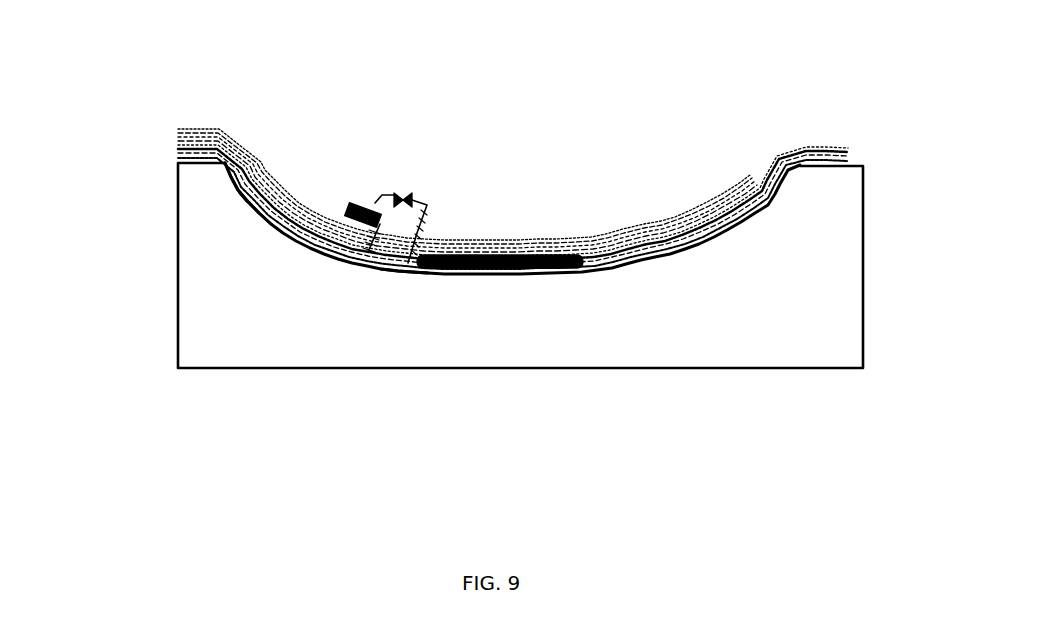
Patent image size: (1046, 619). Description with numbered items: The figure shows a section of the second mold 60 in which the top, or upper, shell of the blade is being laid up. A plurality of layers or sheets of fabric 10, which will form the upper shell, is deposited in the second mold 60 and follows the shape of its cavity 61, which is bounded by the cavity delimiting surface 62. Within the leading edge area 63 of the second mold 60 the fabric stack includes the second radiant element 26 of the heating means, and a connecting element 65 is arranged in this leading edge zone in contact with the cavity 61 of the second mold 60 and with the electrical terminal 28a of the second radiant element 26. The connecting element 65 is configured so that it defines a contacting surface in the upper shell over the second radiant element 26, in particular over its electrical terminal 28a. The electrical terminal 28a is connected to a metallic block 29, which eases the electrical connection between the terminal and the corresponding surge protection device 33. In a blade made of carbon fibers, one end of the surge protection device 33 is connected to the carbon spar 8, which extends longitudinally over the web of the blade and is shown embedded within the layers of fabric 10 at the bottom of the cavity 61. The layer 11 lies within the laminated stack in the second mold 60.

The carbon spar 8 is at (498, 268).
The layers or sheets of fabric 10 is at (455, 144).
The layer 11 is at (767, 200).
The second radiant element 26 is at (203, 147).
The electrical terminal 28a is at (178, 152).
The metallic block 29 is at (352, 207).
The surge protection device 33 is at (402, 193).
The second mold 60 is at (783, 248).
The cavity 61 is at (663, 197).
The cavity delimiting surface 62 is at (390, 270).
The leading edge area 63 is at (240, 193).
The connecting element 65 is at (228, 182).